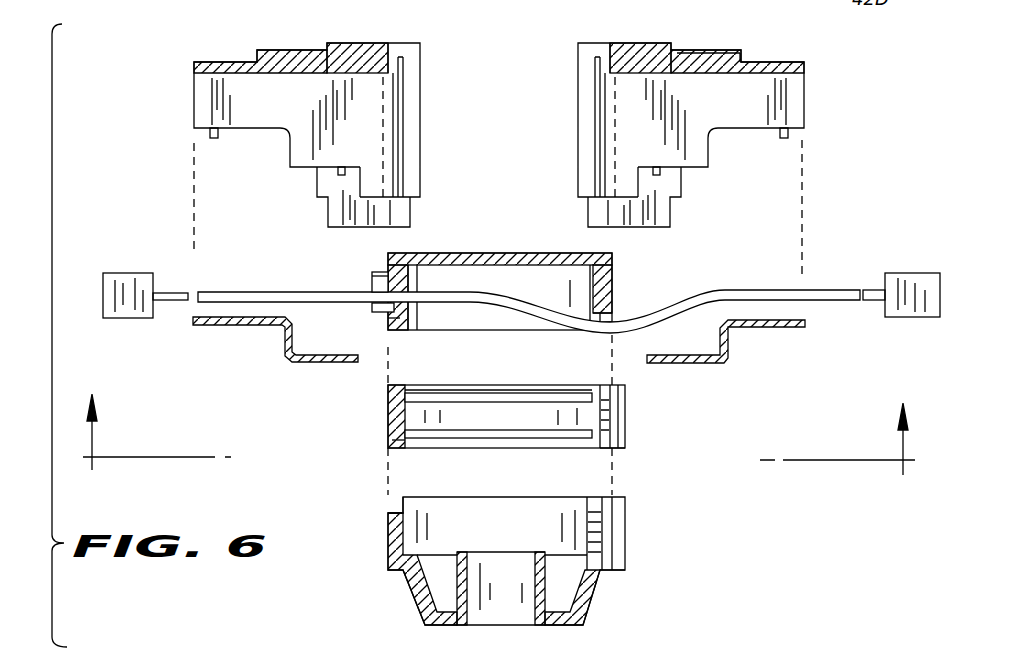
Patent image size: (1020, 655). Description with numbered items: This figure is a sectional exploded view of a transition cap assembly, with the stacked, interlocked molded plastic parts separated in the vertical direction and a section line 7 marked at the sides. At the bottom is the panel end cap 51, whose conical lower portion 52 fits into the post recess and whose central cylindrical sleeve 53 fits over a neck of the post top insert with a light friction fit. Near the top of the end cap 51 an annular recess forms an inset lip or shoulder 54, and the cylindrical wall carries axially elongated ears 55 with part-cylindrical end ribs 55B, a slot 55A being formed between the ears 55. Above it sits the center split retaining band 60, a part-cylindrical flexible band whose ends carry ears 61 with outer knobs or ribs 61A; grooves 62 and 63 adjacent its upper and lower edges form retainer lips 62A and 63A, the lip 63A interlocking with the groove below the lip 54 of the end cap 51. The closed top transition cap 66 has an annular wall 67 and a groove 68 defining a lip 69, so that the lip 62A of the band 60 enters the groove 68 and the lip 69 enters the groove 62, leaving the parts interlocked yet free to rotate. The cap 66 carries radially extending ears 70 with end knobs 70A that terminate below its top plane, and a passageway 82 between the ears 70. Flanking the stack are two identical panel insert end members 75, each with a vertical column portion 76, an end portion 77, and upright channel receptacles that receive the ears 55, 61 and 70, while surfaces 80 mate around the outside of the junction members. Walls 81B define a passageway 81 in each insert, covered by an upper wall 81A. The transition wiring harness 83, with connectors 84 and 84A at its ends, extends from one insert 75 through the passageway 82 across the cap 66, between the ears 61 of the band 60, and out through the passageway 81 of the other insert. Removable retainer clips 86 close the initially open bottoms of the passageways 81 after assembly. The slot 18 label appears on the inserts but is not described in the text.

The section line 7- 7 is at (886, 500).
The slot 18 is at (404, 117).
The panel end cap 51 is at (387, 548).
The conical lower portion 52 is at (417, 600).
The central cylindrical sleeve 53 is at (470, 603).
The annular lip or shoulder 54 is at (395, 505).
The ears 55 is at (617, 548).
The slot 55A is at (591, 520).
The end ribs 55B is at (615, 574).
The center split retaining band 60 is at (384, 412).
The ears 61 is at (604, 420).
The knobs or ribs 61A is at (617, 450).
The groove 62 is at (535, 398).
The retainer lip 62A is at (458, 386).
The groove 63 is at (493, 438).
The retainer lip 63A is at (397, 443).
The closed top transition cap 66 is at (497, 253).
The annular wall 67 is at (478, 317).
The groove 68 is at (393, 313).
The lip 69 is at (397, 319).
The ears 70 is at (372, 281).
The outer end knobs or ribs 70A is at (382, 272).
The panel insert end member 75 is at (350, 56).
The vertical column portion 76 is at (412, 177).
The end portion 77 is at (650, 56).
The surfaces 80 is at (411, 86).
The passageway 81 is at (285, 118).
The upper wall 81A is at (258, 56).
The walls 81B is at (218, 102).
The passageway 82 is at (413, 283).
The transition wiring harness 83 is at (177, 303).
The end connector member 84 is at (122, 273).
The input end connector 84A is at (910, 273).
The removable retainer clips 86 is at (245, 326).